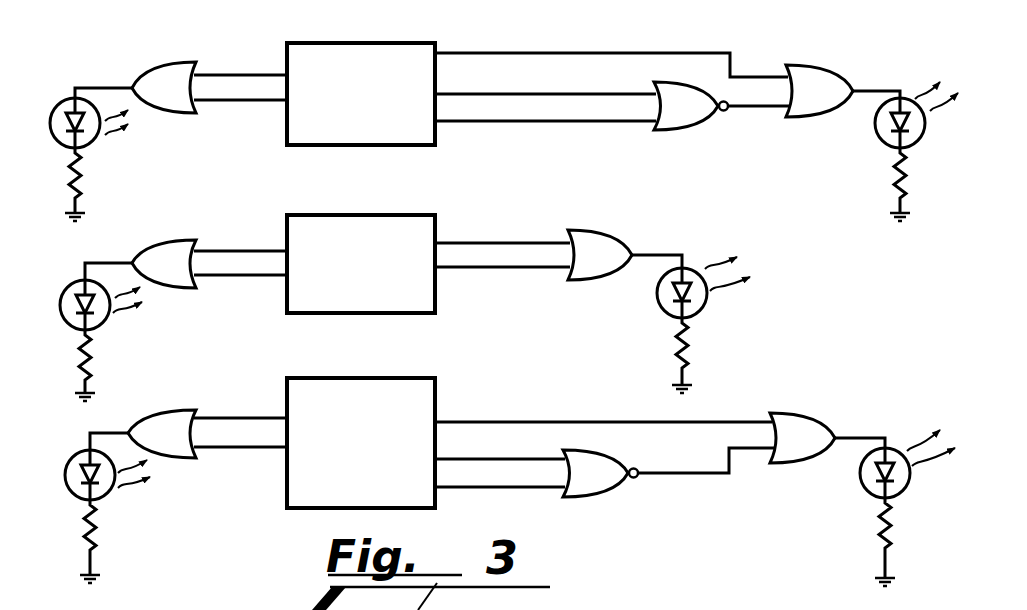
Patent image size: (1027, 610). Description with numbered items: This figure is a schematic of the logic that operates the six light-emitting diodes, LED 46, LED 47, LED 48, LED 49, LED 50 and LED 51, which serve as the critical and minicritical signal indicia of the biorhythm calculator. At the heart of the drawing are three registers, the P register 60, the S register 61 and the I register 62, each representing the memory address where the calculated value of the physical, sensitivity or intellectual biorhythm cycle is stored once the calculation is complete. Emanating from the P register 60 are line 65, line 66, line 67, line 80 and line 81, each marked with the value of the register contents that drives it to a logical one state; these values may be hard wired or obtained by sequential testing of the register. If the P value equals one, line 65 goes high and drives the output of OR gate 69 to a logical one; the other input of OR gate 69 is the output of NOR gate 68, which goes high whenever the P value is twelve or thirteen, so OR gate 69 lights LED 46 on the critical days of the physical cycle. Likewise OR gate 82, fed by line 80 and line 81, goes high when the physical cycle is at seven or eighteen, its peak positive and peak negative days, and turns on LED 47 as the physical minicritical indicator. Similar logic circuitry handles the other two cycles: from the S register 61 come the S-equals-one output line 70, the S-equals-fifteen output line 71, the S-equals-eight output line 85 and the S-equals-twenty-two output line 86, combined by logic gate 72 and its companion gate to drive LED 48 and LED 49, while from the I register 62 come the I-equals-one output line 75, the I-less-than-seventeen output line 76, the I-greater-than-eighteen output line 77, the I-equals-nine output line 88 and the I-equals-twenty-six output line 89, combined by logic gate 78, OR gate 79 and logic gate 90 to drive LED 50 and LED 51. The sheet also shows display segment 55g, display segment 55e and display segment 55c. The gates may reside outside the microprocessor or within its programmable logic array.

The LED 46 is at (876, 133).
The LED 47 is at (52, 118).
The LED 48 is at (660, 303).
The LED 49 is at (62, 307).
The LED 50 is at (863, 480).
The LED 51 is at (68, 485).
The P register 60 is at (407, 43).
The S register 61 is at (387, 215).
The I register 62 is at (397, 378).
The line 65 is at (695, 53).
The line 66 is at (633, 93).
The line 67 is at (626, 122).
The NOR gate 68 is at (690, 131).
The OR gate 69 is at (838, 70).
The S=1 output line 70 is at (541, 243).
The S=15 output line 71 is at (556, 268).
The logic gate 72 is at (615, 230).
The I=1 output line 75 is at (662, 423).
The I 17 output line 76 is at (538, 459).
The I 18 output line 77 is at (543, 488).
The logic gate 78 is at (610, 498).
The OR gate 79 is at (800, 413).
The line 80 is at (271, 72).
The line 81 is at (267, 103).
The OR gate 82 is at (192, 62).
The S=8 output line 85 is at (269, 249).
The S=22 output line 86 is at (273, 277).
The I=9 output line 88 is at (268, 416).
The I=26 output line 89 is at (271, 449).
The logic gate 90 is at (184, 409).
The display segment 55g is at (399, 599).
The display segment 55e is at (473, 599).
The display segment 55c is at (536, 599).